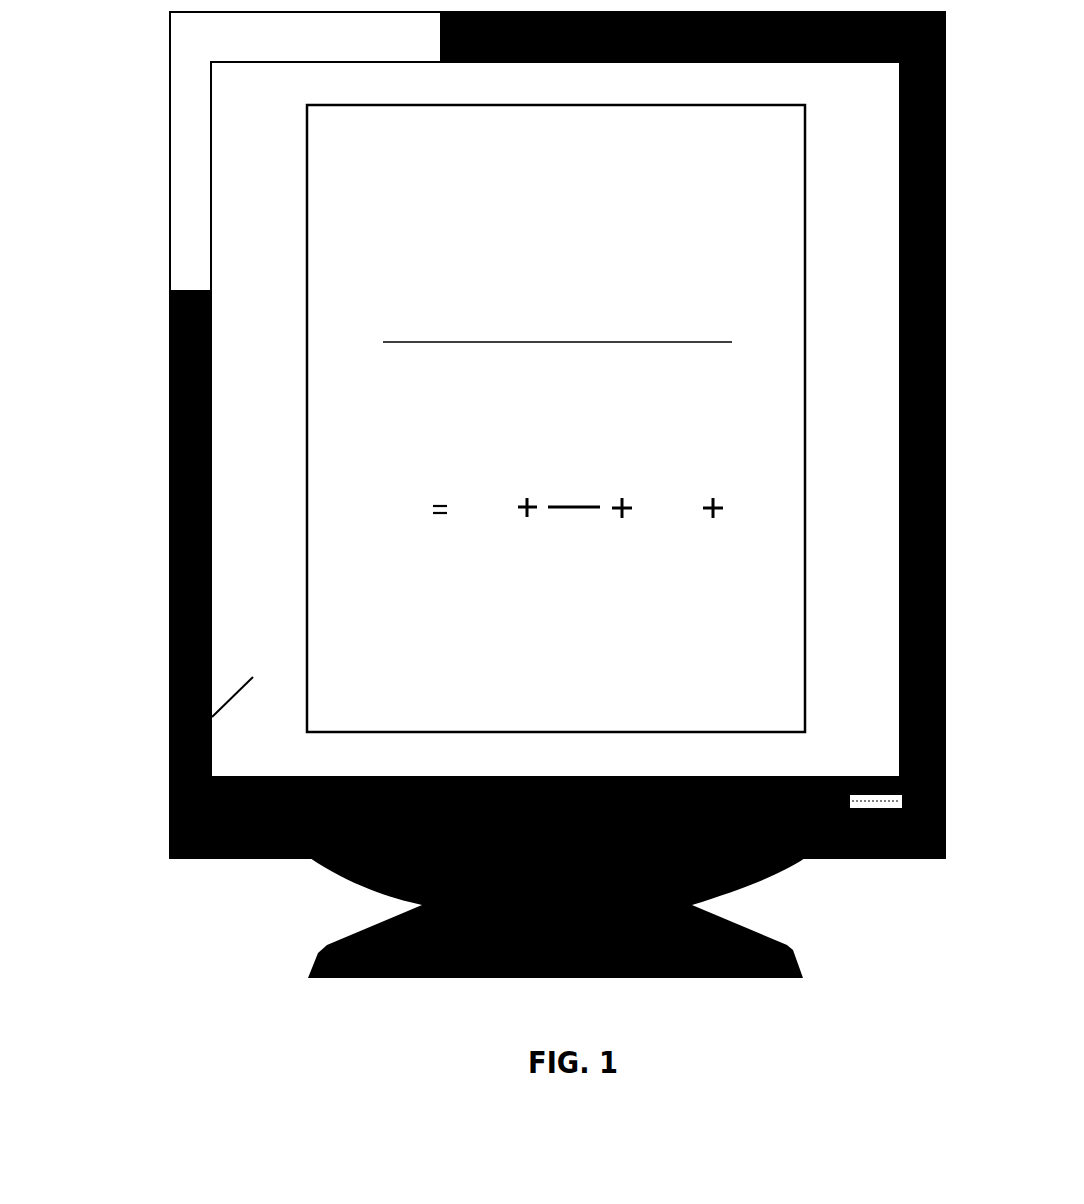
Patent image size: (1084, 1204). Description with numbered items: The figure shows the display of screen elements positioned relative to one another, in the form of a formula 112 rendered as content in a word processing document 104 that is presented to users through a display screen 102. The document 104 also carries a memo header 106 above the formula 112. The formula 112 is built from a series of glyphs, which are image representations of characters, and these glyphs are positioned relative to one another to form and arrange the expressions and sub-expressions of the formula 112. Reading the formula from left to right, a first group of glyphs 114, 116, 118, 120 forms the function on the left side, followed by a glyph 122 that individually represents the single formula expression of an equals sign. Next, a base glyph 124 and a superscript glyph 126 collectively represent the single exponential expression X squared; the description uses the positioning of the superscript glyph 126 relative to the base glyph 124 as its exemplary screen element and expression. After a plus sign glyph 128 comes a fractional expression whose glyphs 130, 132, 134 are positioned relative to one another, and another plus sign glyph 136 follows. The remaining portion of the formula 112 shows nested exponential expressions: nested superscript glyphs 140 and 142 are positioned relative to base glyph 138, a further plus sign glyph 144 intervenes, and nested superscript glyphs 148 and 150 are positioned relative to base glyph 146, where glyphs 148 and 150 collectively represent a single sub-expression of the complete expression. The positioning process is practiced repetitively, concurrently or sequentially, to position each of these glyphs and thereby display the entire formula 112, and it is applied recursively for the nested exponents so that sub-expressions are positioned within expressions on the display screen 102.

The display screen 102 is at (170, 742).
The word processing document 104 is at (805, 655).
The memo header text 106 is at (338, 250).
The formula 112 is at (342, 490).
The glyph 114 is at (369, 518).
The glyph 116 is at (376, 488).
The glyph 118 is at (400, 490).
The glyph 120 is at (407, 517).
The glyph 122 is at (437, 502).
The base glyph 124 is at (482, 522).
The superscript glyph 126 is at (502, 487).
The glyph 128 is at (603, 513).
The glyph 130 is at (569, 472).
The glyph 132 is at (584, 514).
The glyph 134 is at (594, 512).
The glyph 136 is at (622, 497).
The base glyph 138 is at (662, 522).
The nested superscript glyph 140 is at (689, 497).
The nested superscript glyph 142 is at (703, 469).
The plus sign 144 is at (717, 498).
The base glyph 146 is at (745, 516).
The nested superscript glyph 148 is at (772, 482).
The nested superscript glyph 150 is at (786, 502).